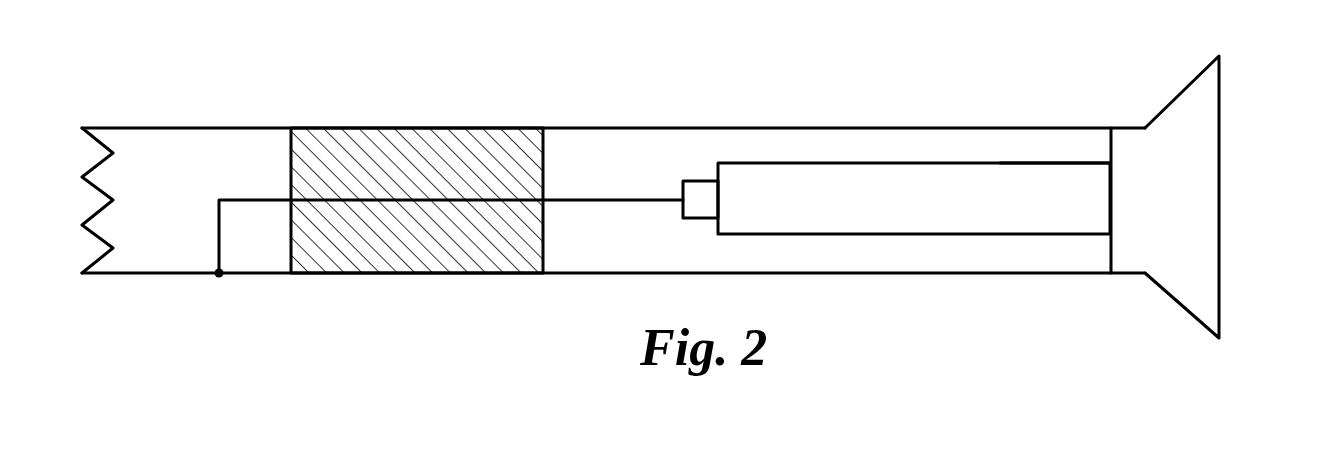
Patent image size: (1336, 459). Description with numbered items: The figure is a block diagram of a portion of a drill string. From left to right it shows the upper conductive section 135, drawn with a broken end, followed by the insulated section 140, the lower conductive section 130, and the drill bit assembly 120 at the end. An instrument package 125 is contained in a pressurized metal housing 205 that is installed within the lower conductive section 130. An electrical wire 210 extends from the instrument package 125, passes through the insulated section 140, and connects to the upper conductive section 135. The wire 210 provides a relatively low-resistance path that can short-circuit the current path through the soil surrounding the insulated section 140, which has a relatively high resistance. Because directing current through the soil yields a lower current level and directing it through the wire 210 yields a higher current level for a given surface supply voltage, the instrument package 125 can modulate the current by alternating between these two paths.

The drill bit assembly 120 is at (1200, 190).
The instrument package 125 is at (847, 178).
The lower conductive section 130 is at (707, 137).
The upper conductive section 135 is at (183, 138).
The insulated section 140 is at (430, 137).
The pressurized metal housing 205 is at (996, 162).
The electrical wire 210 is at (572, 197).